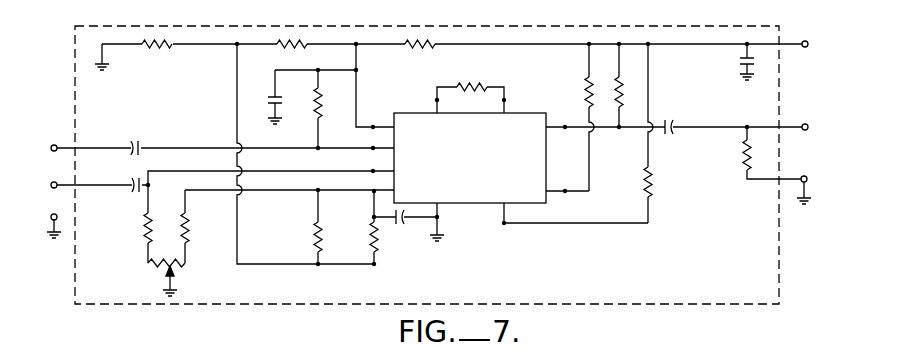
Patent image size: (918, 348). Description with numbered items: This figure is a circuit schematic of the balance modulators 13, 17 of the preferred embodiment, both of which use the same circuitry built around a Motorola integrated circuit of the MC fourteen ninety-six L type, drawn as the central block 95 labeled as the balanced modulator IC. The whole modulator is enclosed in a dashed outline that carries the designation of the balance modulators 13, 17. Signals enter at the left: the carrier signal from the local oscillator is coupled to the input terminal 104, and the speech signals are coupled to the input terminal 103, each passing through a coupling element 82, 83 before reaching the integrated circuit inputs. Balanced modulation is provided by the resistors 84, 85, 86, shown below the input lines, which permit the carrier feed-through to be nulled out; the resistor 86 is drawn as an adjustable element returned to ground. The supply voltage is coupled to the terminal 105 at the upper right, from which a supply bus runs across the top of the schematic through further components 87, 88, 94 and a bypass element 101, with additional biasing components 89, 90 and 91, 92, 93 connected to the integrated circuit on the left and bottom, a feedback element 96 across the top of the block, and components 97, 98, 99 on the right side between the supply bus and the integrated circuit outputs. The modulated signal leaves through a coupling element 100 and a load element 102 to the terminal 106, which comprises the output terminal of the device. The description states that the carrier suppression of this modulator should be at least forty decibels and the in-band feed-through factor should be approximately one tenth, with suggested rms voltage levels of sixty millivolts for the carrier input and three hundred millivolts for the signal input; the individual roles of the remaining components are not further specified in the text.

The balance modulator 13 is at (452, 152).
The balance modulator 17 is at (750, 27).
The coupling capacitor 82 is at (140, 142).
The coupling capacitor 83 is at (135, 180).
The resistor 84 is at (143, 228).
The resistor 85 is at (190, 228).
The resistor 86 is at (179, 274).
The resistor 87 is at (174, 52).
The resistor 88 is at (307, 48).
The bypass capacitor 89 is at (282, 104).
The resistor 90 is at (325, 110).
The resistor 91 is at (314, 237).
The resistor 92 is at (369, 237).
The capacitor 93 is at (396, 224).
The resistor 94 is at (433, 50).
The balanced modulator IC (MC1496L) 95 is at (534, 100).
The resistor 96 is at (465, 84).
The resistor 97 is at (584, 82).
The resistor 98 is at (615, 89).
The resistor 99 is at (653, 182).
The output coupling capacitor 100 is at (669, 122).
The supply bypass capacitor 101 is at (740, 62).
The load resistor 102 is at (741, 155).
The input terminal 103 is at (65, 182).
The input terminal 104 is at (66, 144).
The supply voltage terminal 105 is at (794, 53).
The output terminal 106 is at (797, 120).